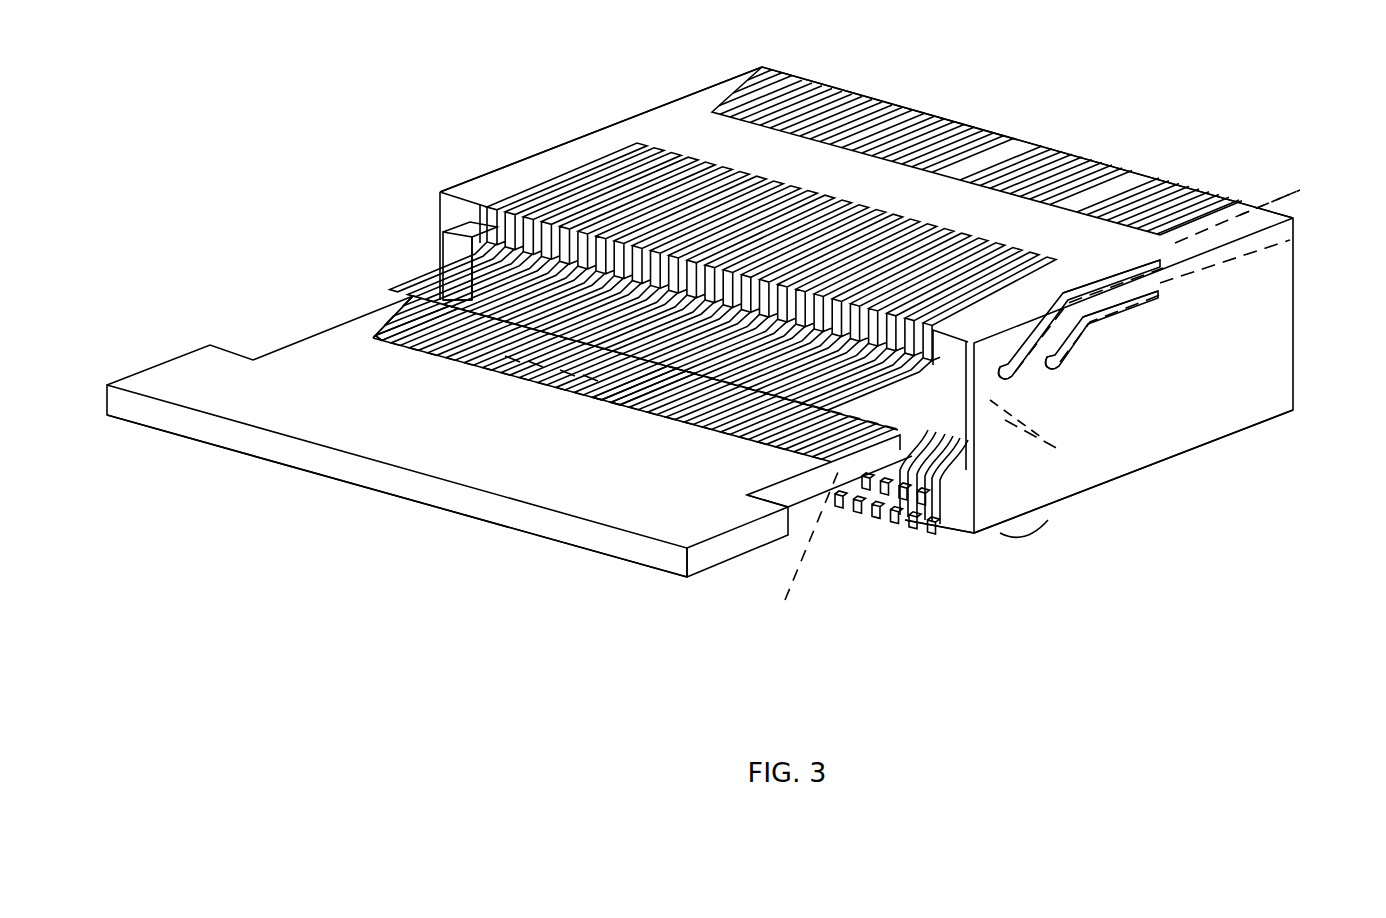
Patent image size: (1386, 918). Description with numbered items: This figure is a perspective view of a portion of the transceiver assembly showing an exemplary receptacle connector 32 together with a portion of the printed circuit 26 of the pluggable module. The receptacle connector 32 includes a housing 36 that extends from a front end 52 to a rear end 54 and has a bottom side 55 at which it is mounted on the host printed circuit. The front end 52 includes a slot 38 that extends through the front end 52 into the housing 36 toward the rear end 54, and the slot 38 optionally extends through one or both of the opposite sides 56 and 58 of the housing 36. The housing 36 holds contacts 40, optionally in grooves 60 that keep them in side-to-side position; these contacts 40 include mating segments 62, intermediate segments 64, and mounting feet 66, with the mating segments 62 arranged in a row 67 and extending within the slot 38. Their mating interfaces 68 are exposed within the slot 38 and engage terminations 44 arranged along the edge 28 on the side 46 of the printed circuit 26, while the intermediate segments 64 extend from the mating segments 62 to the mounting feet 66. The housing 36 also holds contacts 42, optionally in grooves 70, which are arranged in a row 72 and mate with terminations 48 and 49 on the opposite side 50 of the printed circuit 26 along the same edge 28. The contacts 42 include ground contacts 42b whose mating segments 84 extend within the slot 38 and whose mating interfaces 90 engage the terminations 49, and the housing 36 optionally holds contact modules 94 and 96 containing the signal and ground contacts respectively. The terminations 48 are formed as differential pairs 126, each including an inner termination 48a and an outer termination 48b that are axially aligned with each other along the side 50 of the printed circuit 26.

The printed circuit 26 is at (690, 579).
The edge 28 is at (380, 312).
The receptacle connector 32 is at (712, 86).
The housing 36 is at (1182, 432).
The slot 38 is at (443, 232).
The contacts 40 is at (920, 522).
The contacts 42 is at (1105, 276).
The ground contacts 42b is at (1117, 268).
The terminations 44 is at (782, 606).
The side 46 is at (470, 510).
The terminations 48 is at (780, 455).
The inner terminations 48a is at (692, 425).
The outer terminations 48b is at (402, 343).
The terminations 49 is at (400, 306).
The side 50 is at (489, 478).
The front end 52 is at (975, 536).
The rear end 54 is at (1294, 412).
The bottom side 55 is at (1128, 498).
The side 56 is at (1226, 395).
The side 58 is at (628, 142).
The grooves 60 is at (540, 282).
The mating segments 62 is at (908, 208).
The intermediate segments 64 is at (930, 518).
The mounting feet 66 is at (880, 495).
The row 67 is at (493, 282).
The mating interfaces 68 is at (1020, 425).
The grooves 70 is at (640, 146).
The row 72 is at (1310, 195).
The mating segments 84 is at (1002, 236).
The mating interfaces 90 is at (1060, 360).
The contact modules 94 is at (950, 118).
The contact modules 96 is at (1200, 187).
The differential pairs 126 is at (500, 375).